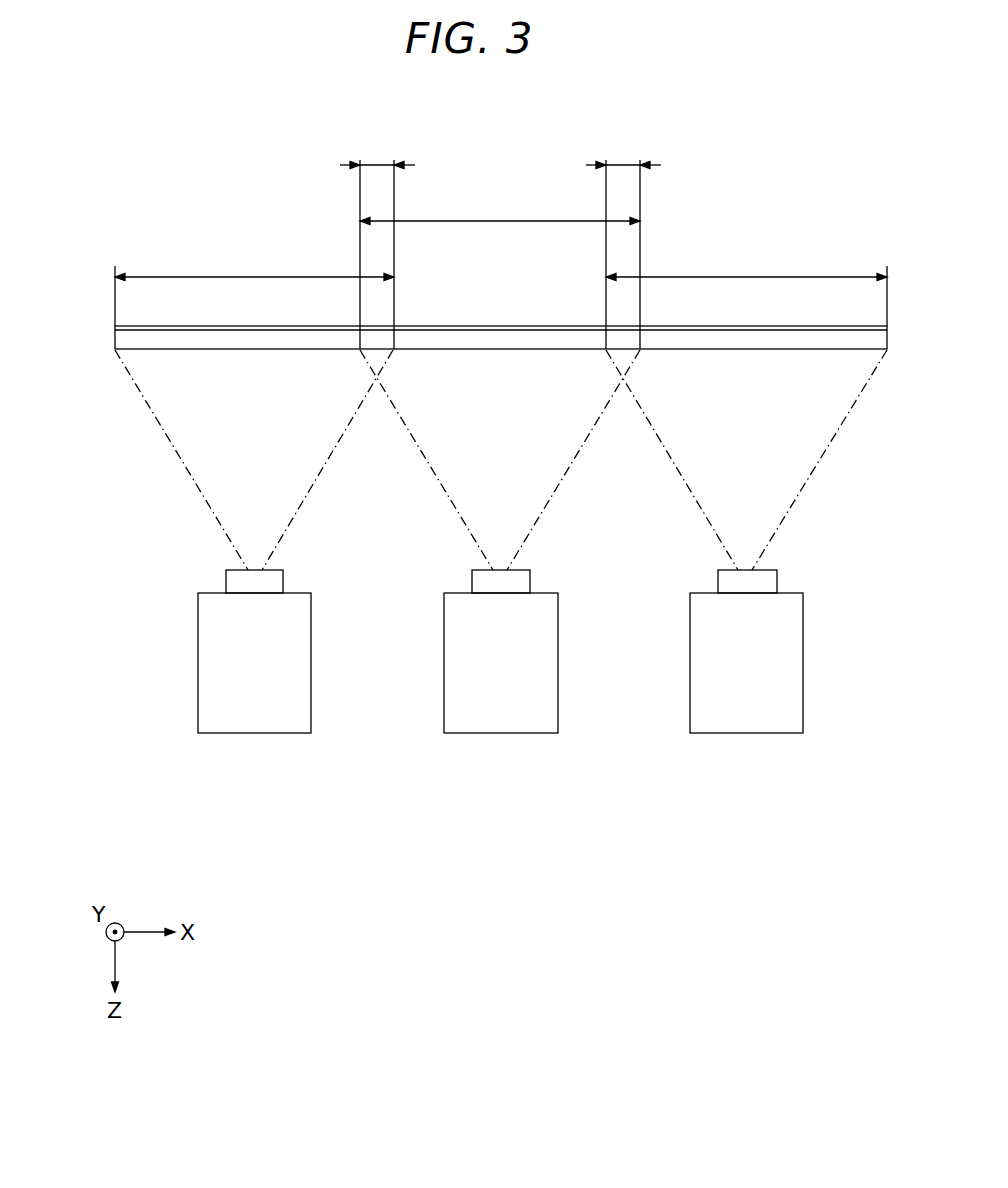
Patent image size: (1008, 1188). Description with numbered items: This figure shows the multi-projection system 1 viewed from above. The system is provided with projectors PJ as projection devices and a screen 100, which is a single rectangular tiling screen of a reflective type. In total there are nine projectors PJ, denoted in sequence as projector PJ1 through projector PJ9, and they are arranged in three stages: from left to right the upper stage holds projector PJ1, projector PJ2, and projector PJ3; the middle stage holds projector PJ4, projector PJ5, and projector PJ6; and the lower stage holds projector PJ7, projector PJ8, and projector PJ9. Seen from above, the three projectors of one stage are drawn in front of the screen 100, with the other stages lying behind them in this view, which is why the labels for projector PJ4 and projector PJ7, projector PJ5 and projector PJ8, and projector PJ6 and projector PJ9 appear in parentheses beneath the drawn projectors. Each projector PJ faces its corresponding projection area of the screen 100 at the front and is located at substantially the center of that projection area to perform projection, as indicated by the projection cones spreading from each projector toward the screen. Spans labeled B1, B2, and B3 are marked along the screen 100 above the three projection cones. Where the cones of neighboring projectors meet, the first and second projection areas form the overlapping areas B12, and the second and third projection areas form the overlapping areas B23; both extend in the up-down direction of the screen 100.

The multi-projection system 1 is at (177, 166).
The screen 100 is at (115, 340).
The projectors PJ is at (164, 758).
The projector PJ1 is at (257, 723).
The projector PJ2 is at (502, 723).
The projector PJ3 is at (748, 723).
The projector PJ4 is at (254, 609).
The projector PJ5 is at (500, 609).
The projector PJ6 is at (746, 609).
The projector PJ7 is at (254, 609).
The projector PJ8 is at (500, 609).
The projector PJ9 is at (746, 609).
The projection width of first projector B1 is at (254, 284).
The projection width of second projector B2 is at (500, 254).
The projection width of third projector B3 is at (746, 284).
The overlapping areas B12 is at (377, 241).
The overlapping areas B23 is at (623, 240).